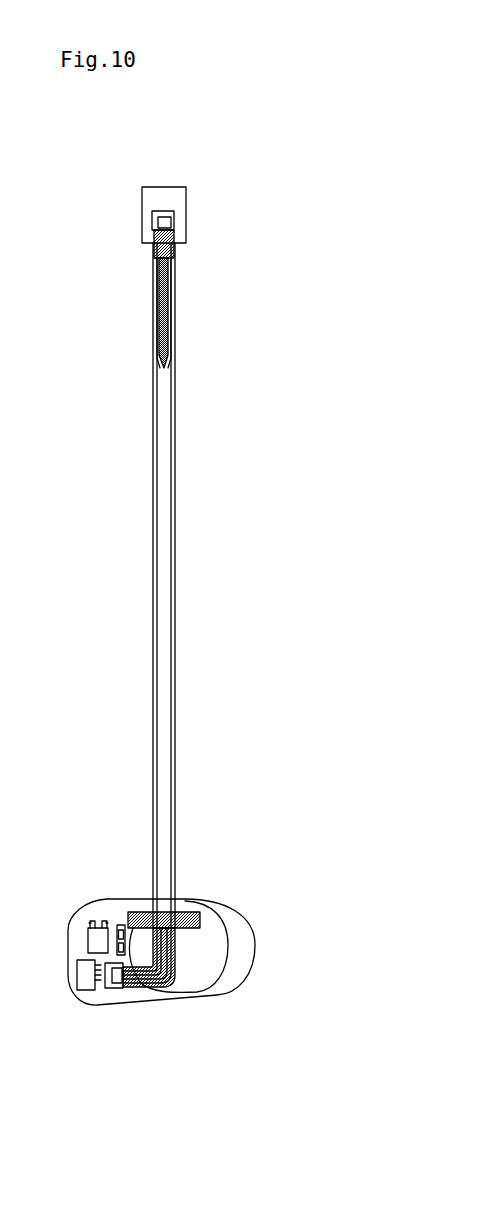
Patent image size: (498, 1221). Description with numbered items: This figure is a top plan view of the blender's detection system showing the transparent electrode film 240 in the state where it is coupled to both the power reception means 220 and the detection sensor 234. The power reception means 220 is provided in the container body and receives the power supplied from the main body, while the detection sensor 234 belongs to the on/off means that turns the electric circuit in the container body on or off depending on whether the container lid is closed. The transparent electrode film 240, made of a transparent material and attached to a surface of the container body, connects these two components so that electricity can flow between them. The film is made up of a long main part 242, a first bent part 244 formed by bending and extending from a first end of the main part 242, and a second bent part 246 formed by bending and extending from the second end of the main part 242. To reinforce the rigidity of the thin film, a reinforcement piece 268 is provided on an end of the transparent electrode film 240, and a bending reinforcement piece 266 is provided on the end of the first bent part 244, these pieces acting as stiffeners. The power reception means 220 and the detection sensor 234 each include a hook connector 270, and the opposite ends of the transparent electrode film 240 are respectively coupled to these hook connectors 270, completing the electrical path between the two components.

The power reception means 220 is at (277, 940).
The detection sensor 234 is at (202, 190).
The transparent electrode film 240 is at (216, 579).
The main part 242 is at (172, 707).
The first bent part 244 is at (175, 947).
The second bent part 246 is at (172, 315).
The bending reinforcement piece 266 is at (150, 990).
The reinforcement piece 268 is at (193, 912).
The hook connector 270 is at (171, 222).